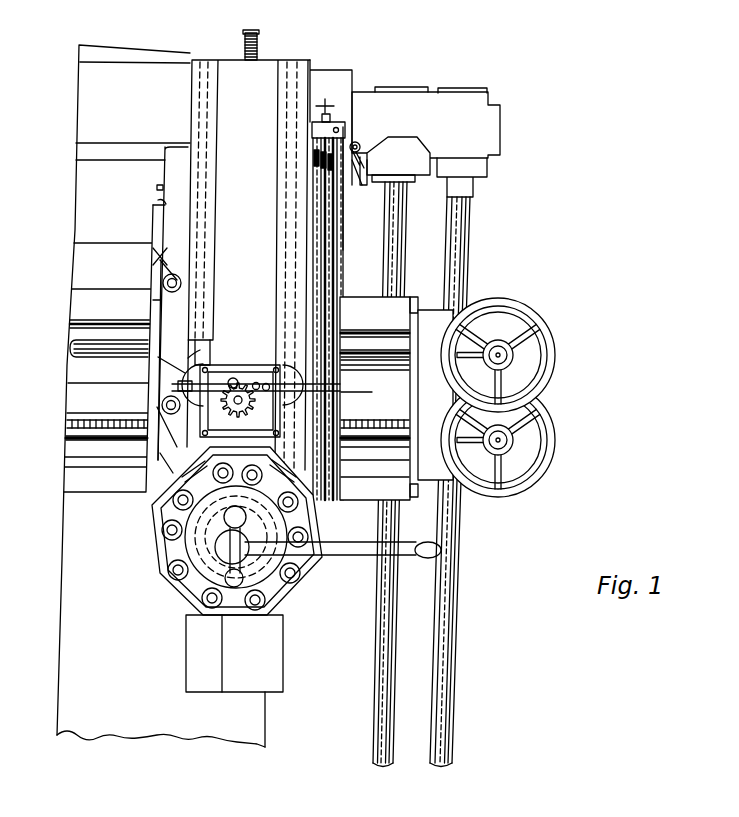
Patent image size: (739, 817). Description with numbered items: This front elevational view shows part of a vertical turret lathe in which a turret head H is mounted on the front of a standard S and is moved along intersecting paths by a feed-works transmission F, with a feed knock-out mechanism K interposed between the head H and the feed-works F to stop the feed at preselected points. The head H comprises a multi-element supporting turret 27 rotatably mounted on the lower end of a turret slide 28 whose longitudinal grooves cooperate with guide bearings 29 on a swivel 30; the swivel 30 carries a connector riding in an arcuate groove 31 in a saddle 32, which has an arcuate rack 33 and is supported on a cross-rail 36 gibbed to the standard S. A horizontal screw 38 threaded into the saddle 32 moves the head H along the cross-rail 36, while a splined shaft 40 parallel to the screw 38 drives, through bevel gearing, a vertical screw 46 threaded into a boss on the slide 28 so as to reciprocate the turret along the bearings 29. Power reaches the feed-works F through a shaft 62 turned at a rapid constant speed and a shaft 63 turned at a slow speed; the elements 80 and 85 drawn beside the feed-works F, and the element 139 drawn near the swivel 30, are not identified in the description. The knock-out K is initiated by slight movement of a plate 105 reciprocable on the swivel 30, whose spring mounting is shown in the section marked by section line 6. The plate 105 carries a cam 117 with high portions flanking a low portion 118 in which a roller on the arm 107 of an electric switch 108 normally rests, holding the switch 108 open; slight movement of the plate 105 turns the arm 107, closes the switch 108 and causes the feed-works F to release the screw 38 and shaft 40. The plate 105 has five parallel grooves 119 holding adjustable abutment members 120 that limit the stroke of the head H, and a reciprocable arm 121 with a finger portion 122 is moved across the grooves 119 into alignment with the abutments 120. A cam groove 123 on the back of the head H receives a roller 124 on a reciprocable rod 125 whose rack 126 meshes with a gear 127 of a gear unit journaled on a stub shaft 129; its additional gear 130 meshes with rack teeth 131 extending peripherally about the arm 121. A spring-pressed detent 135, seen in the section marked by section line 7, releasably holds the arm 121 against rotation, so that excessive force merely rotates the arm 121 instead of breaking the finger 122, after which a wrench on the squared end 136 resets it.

The multi-element supporting turret 27 is at (295, 592).
The turret slide 28 is at (222, 118).
The guide bearings 29 is at (209, 63).
The swivel 30 is at (173, 170).
The arcuate groove 31 is at (155, 250).
The saddle 32 is at (152, 270).
The arcuate rack 33 is at (158, 203).
The cross-rail 36 is at (82, 243).
The horizontally disposed screw 38 is at (402, 445).
The splined shaft 40 is at (402, 353).
The vertically-disposed screw 46 is at (257, 42).
The shaft 62 is at (448, 240).
The shaft 63 is at (386, 232).
The handwheel shaft 80 is at (508, 358).
The bearing block 85 is at (452, 382).
The plate 105 is at (308, 287).
The arm 107 is at (366, 152).
The electric contact 108 is at (372, 172).
The cam 117 is at (357, 143).
The low portion 118 is at (366, 185).
The parallel grooves 119 is at (325, 212).
The abutment members 120 is at (312, 170).
The reciprocable arm 121 is at (340, 392).
The finger portion 122 is at (332, 393).
The cam groove 123 is at (162, 554).
The roller 124 is at (156, 516).
The reciprocable rod 125 is at (215, 430).
The rack 126 is at (208, 392).
The gear 127 is at (236, 378).
The stub shaft 129 is at (250, 412).
The additional gear 130 is at (256, 382).
The rack teeth 131 is at (266, 383).
The spring-pressed detent 135 is at (188, 368).
The squared end 136 is at (160, 392).
The bushing 139 is at (172, 386).
The section line 6 is at (355, 108).
The section line 7 is at (183, 421).
The feed knock-out mechanism K is at (228, 318).
The feed-works transmission F is at (510, 331).
The turret head H is at (172, 559).
The standard S is at (253, 727).